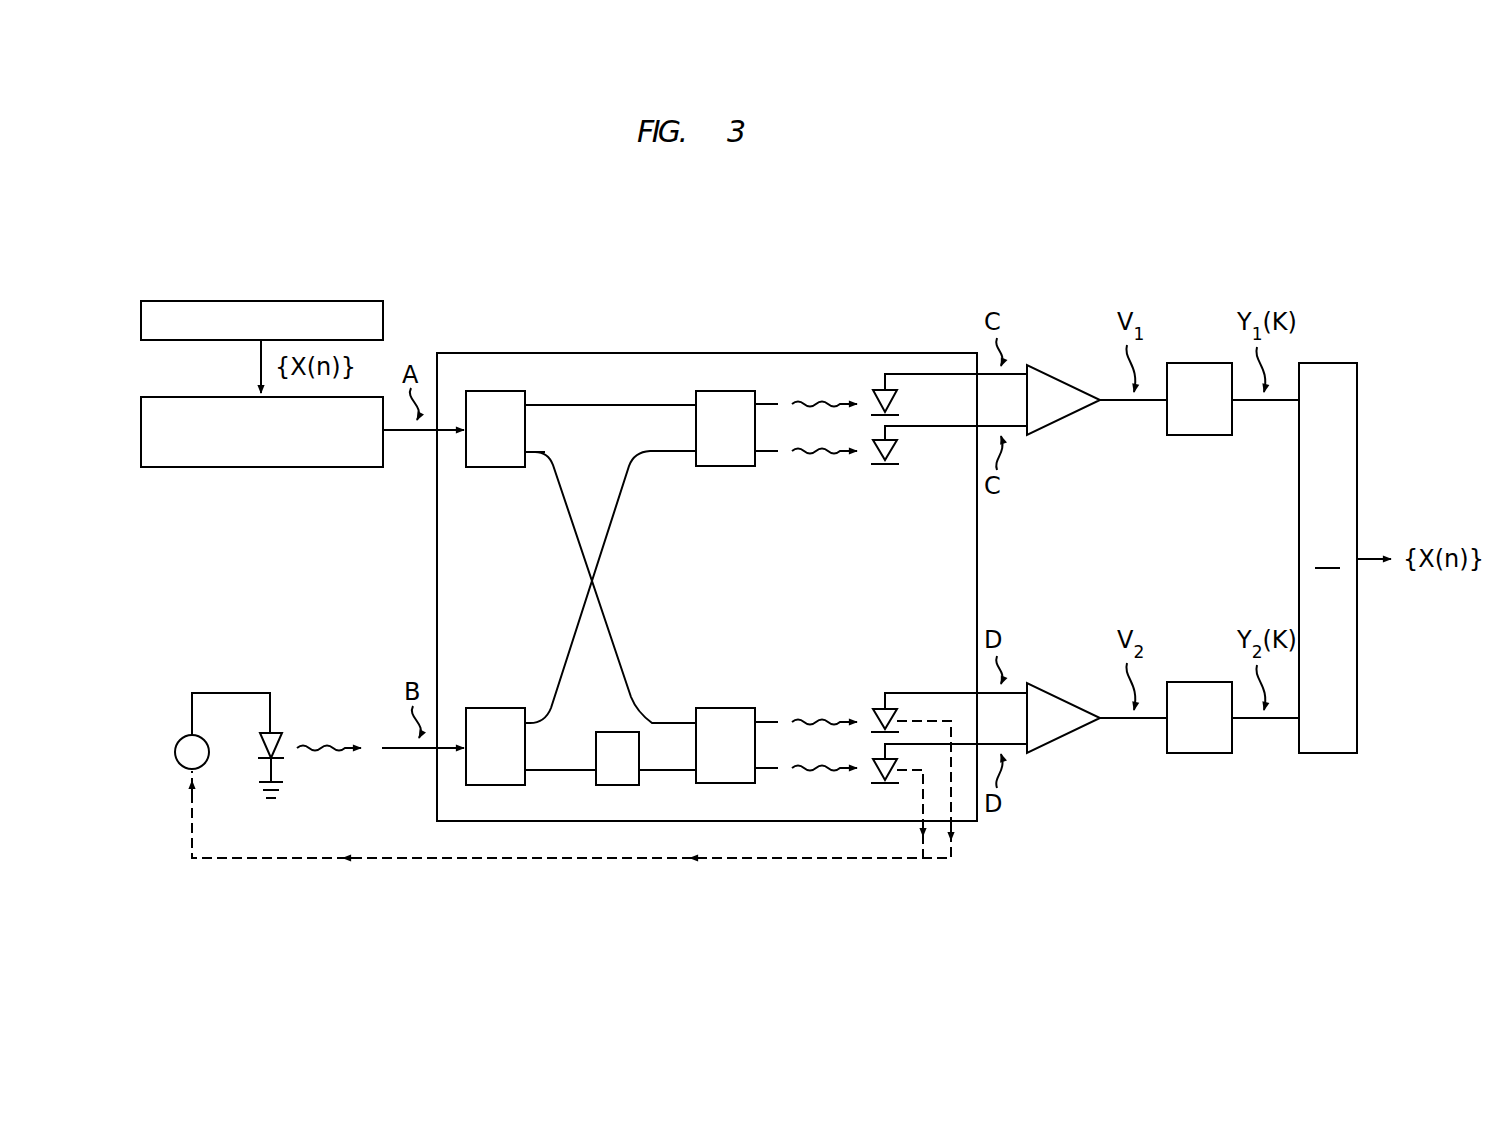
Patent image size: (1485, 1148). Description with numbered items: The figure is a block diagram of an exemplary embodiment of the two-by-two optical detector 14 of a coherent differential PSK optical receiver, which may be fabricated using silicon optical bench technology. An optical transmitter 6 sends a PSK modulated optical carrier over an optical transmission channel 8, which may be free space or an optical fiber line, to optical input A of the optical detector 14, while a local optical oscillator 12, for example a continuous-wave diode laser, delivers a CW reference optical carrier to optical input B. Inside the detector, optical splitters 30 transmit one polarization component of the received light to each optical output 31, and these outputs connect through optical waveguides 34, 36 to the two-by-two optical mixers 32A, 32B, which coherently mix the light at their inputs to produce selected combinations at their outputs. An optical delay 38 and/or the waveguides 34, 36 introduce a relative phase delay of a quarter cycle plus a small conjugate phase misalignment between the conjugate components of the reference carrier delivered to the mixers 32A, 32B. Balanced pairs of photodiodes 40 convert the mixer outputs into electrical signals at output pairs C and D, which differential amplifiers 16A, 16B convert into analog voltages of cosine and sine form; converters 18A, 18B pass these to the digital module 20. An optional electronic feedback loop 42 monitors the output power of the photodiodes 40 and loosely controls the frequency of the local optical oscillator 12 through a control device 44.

The optical transmitter 6 is at (190, 342).
The optical transmission channel 8 is at (190, 468).
The local optical oscillator 12 is at (282, 731).
The 2×2 optical detector 14 is at (715, 598).
The differential amplifier 16A is at (1068, 411).
The differential amplifier 16B is at (1068, 729).
The digital-to-analog converter 18A is at (1194, 436).
The digital-to-analog converter 18B is at (1194, 754).
The digital module 20 is at (1328, 754).
The optical splitter 30 is at (483, 444).
The optical output 31 is at (543, 407).
The 2×2 optical mixer 32A is at (707, 441).
The 2×2 optical mixer 32B is at (707, 759).
The optical waveguide 34 is at (604, 408).
The optical waveguide 36 is at (614, 670).
The optical delay 38 is at (605, 771).
The photodiodes 40 is at (874, 395).
The electronic feedback loop 42 is at (574, 861).
The control device 44 is at (180, 762).